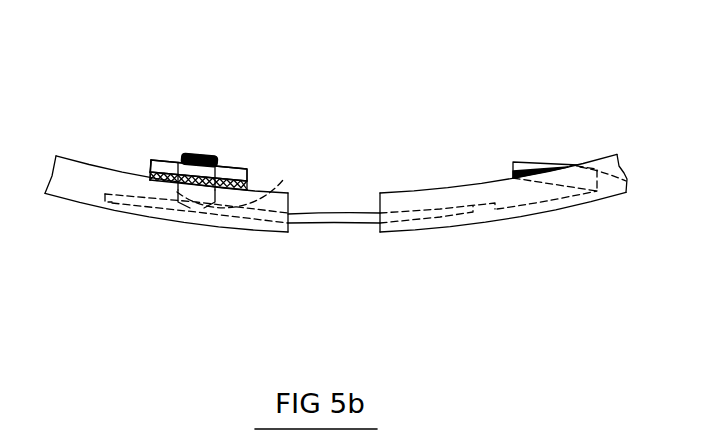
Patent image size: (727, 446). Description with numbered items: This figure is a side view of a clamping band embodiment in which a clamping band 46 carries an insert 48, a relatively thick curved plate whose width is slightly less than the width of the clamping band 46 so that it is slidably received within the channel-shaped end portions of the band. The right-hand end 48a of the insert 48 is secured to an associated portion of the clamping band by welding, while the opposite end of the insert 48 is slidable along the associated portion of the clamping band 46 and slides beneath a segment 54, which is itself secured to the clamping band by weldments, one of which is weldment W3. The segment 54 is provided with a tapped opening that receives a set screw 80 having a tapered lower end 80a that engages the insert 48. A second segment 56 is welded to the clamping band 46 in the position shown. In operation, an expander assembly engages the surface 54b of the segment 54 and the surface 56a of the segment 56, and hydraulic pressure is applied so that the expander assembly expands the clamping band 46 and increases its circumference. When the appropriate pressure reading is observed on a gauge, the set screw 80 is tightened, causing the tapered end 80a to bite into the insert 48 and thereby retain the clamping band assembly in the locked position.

The clamping band 46 is at (542, 225).
The insert 48 is at (340, 222).
The right-hand end of insert 48a is at (468, 216).
The segment 54 is at (230, 163).
The surface of segment 54 54b is at (249, 171).
The segment 56 is at (537, 165).
The surface of segment 56 56a is at (512, 167).
The set screw 80 is at (192, 152).
The tapered lower end 80a is at (283, 180).
The weldment W3 is at (152, 160).